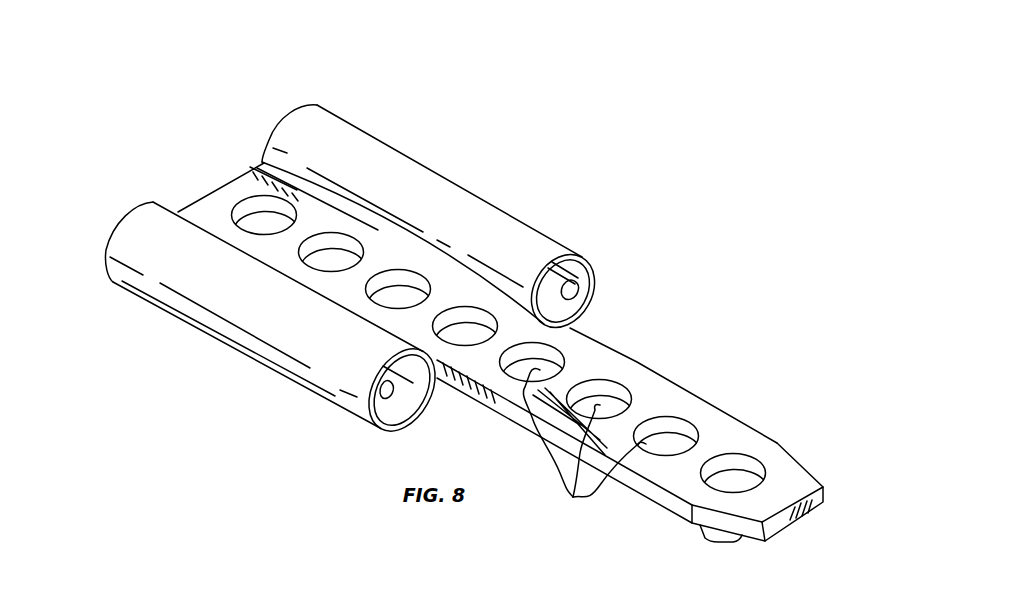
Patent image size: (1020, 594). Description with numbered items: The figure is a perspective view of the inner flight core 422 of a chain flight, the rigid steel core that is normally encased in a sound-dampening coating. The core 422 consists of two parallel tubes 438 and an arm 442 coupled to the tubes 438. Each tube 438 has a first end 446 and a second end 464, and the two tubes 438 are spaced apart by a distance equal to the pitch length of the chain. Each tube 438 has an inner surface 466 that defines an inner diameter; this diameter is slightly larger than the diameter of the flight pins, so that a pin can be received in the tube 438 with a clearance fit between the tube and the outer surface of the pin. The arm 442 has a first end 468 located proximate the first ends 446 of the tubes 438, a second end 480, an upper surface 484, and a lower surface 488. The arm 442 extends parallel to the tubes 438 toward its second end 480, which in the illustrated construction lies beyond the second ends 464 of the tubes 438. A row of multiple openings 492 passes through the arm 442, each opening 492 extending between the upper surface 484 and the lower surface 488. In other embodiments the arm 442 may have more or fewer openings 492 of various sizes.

The inner flight core 422 is at (737, 153).
The tubes 438 is at (465, 173).
The arm 442 is at (632, 357).
The first end 446 is at (283, 113).
The second end 464 is at (582, 257).
The inner surface 466 is at (590, 300).
The first end 468 is at (198, 205).
The second end 480 is at (818, 502).
The upper surface 484 is at (683, 405).
The lower surface 488 is at (738, 537).
The openings 492 is at (584, 447).